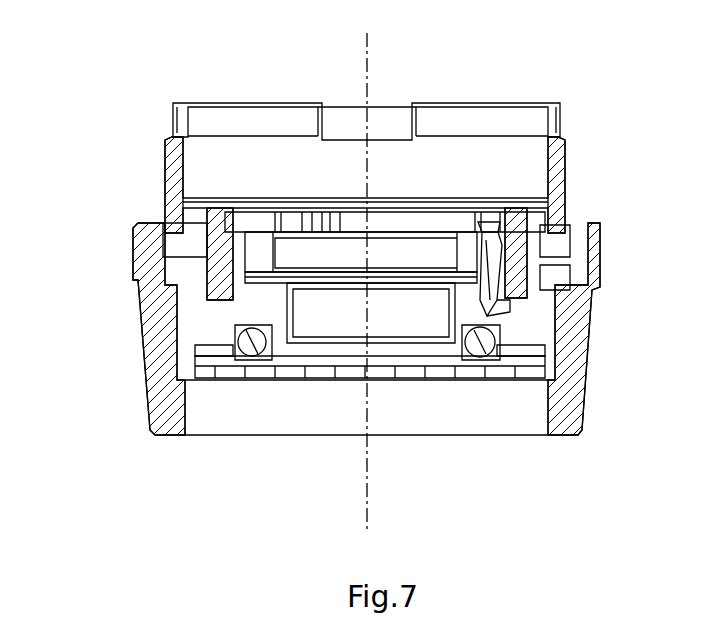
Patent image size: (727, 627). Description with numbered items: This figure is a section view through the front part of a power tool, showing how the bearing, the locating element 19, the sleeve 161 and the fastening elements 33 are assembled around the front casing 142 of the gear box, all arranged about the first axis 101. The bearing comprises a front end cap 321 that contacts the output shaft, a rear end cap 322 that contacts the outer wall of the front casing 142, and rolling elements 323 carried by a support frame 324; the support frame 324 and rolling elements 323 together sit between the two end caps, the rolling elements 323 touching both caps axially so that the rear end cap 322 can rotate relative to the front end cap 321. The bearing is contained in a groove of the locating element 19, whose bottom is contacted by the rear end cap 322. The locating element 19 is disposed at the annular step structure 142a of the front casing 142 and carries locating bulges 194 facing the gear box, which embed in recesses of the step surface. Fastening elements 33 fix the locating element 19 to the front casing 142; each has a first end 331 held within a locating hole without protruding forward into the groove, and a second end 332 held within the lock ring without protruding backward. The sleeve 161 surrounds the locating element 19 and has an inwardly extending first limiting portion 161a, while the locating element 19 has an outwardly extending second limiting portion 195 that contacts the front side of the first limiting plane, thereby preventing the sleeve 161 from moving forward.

The first axis 101 is at (362, 70).
The front casing 142 is at (566, 190).
The annular step structure 142a is at (232, 283).
The sleeve 161 is at (568, 396).
The first limiting portion 161a is at (546, 362).
The second limiting portion 195 is at (228, 360).
The locating element 19 is at (522, 333).
The locating bulges 194 is at (590, 276).
The rear end cap 322 is at (248, 303).
The rolling elements 323 is at (242, 323).
The front end cap 321 is at (236, 343).
The support frame 324 is at (502, 316).
The fastening elements 33 is at (530, 236).
The first end 331 is at (502, 296).
The second end 332 is at (505, 238).